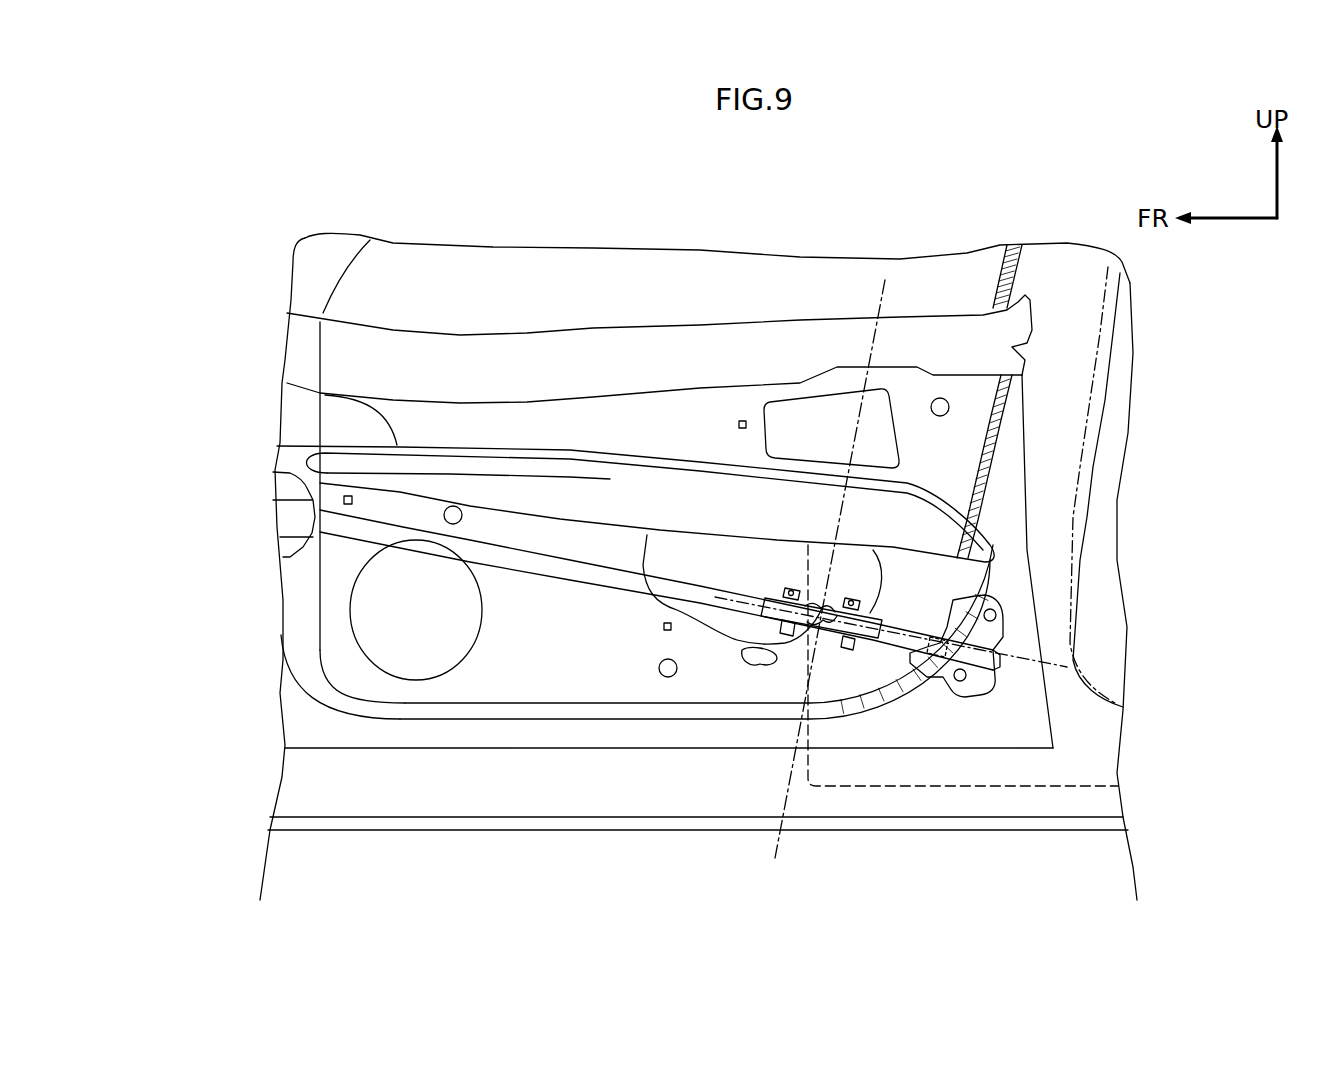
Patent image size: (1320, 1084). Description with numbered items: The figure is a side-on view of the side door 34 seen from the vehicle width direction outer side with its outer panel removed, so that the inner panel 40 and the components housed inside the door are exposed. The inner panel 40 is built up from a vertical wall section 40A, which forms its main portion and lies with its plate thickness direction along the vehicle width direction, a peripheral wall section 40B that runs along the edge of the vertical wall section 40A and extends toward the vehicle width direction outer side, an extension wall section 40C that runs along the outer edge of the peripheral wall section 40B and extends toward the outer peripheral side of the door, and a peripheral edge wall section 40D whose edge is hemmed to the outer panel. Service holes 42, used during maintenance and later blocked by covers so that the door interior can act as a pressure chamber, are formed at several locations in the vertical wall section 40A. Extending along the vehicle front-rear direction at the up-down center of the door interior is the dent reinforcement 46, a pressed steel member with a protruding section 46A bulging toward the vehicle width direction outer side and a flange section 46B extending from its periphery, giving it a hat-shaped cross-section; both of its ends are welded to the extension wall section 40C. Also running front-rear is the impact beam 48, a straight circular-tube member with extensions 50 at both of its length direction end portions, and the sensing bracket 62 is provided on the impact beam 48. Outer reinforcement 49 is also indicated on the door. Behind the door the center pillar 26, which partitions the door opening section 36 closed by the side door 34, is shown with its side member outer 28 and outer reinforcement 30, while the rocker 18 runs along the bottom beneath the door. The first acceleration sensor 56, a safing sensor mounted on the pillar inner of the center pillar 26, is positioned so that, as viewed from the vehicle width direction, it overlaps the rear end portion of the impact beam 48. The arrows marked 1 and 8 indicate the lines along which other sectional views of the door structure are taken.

The section line 1- 1 is at (876, 290).
The section line 8- 8 is at (719, 605).
The rocker 18 is at (623, 803).
The center pillar 26 is at (1082, 369).
The side member outer panel 28 is at (1047, 290).
The center pillar outer reinforcement 30 is at (1093, 453).
The front side door 34 is at (236, 397).
The door opening section 36 is at (993, 296).
The inner panel 40 is at (620, 561).
The vertical wall section 40A is at (333, 560).
The peripheral wall section 40B is at (303, 673).
The extension wall section 40C is at (307, 738).
The peripheral edge wall section 40D is at (413, 748).
The service holes 42 is at (827, 400).
The dent reinforcement 46 is at (635, 458).
The protruding section 46A is at (480, 473).
The flange section 46B is at (530, 450).
The impact beam 48 is at (563, 570).
The outer reinforcement 49 is at (400, 340).
The extensions 50 is at (273, 480).
The first acceleration sensor 56 is at (937, 647).
The sensing bracket 62 is at (809, 596).